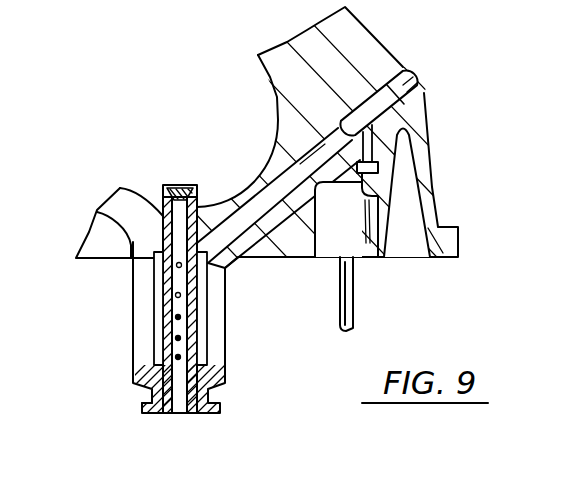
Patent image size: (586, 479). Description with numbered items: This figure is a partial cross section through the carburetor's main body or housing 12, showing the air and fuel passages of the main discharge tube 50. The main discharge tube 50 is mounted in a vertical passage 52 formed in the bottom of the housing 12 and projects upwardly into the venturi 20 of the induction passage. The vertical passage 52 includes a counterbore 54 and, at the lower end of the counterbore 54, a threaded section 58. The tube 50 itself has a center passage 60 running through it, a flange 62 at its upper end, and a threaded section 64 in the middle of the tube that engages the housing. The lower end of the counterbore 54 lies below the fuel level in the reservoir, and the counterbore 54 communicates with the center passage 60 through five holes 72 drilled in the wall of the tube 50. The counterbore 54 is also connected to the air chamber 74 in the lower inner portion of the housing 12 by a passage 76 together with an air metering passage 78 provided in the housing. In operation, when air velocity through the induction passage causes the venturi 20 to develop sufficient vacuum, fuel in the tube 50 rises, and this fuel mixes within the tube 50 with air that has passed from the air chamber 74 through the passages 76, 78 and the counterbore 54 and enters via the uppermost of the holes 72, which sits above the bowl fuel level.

The main body or housing 12 is at (440, 82).
The venturi 20 is at (258, 60).
The main discharge tube 50 is at (171, 268).
The vertical passage 52 is at (162, 200).
The counterbore 54 is at (153, 297).
The threaded section 58 is at (209, 373).
The center passage 60 is at (178, 186).
The flange 62 is at (156, 257).
The threaded section 64 is at (148, 375).
The holes 72 is at (181, 357).
The air chamber 74 is at (404, 240).
The passage 76 is at (242, 228).
The air metering passage 78 is at (375, 188).